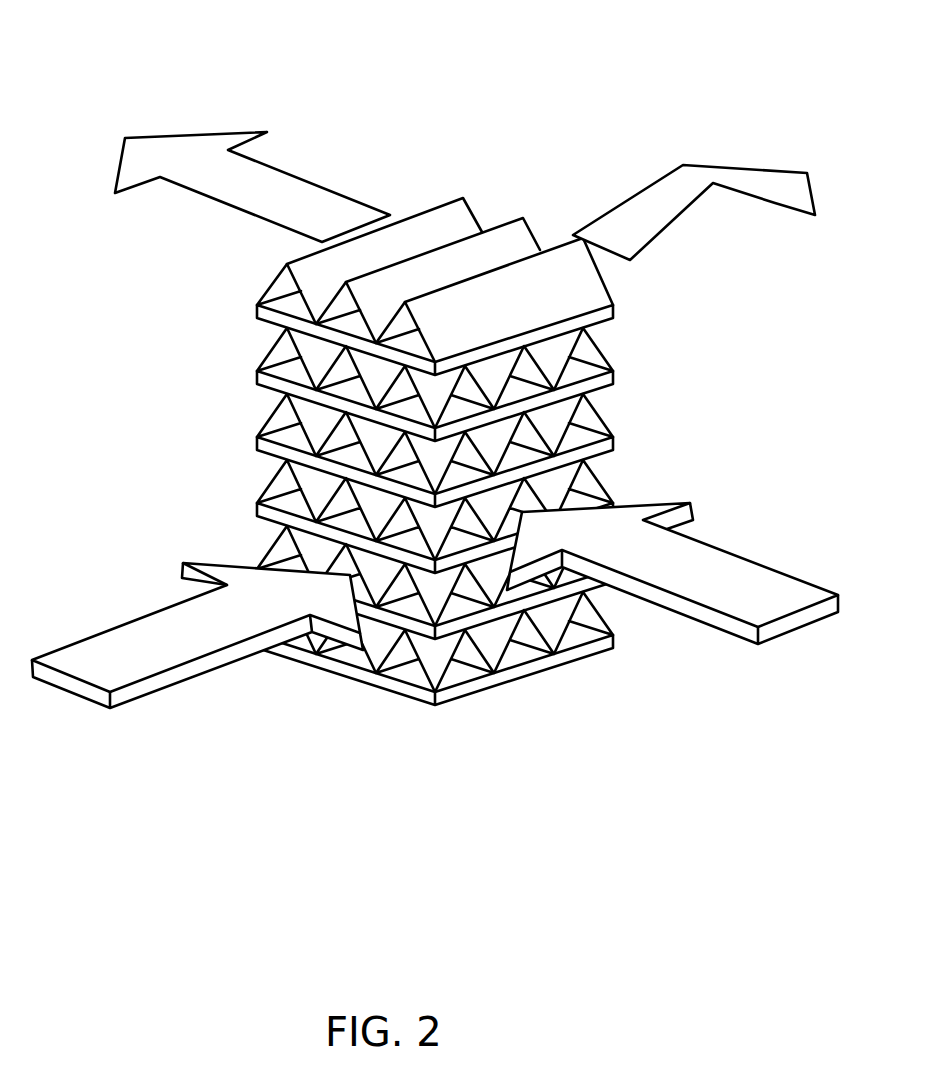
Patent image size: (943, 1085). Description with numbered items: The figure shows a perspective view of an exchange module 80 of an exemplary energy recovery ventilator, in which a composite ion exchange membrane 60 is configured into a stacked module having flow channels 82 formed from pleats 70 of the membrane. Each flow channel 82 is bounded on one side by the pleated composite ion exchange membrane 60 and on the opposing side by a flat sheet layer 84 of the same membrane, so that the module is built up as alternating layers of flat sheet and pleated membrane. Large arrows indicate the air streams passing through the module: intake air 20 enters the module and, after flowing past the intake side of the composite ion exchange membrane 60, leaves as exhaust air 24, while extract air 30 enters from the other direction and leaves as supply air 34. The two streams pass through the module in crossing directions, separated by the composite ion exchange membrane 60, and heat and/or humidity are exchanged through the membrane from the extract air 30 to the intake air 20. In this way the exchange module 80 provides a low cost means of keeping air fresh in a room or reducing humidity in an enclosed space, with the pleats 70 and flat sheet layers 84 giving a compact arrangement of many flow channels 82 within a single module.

The intake air 20 is at (728, 590).
The exhaust air 24 is at (727, 203).
The extract air 30 is at (108, 658).
The supply air 34 is at (188, 163).
The composite ion exchange membrane 60 is at (462, 220).
The pleats 70 is at (413, 227).
The exchange module 80 is at (382, 369).
The flow channels 82 is at (288, 285).
The flat sheet layer 84 is at (280, 332).